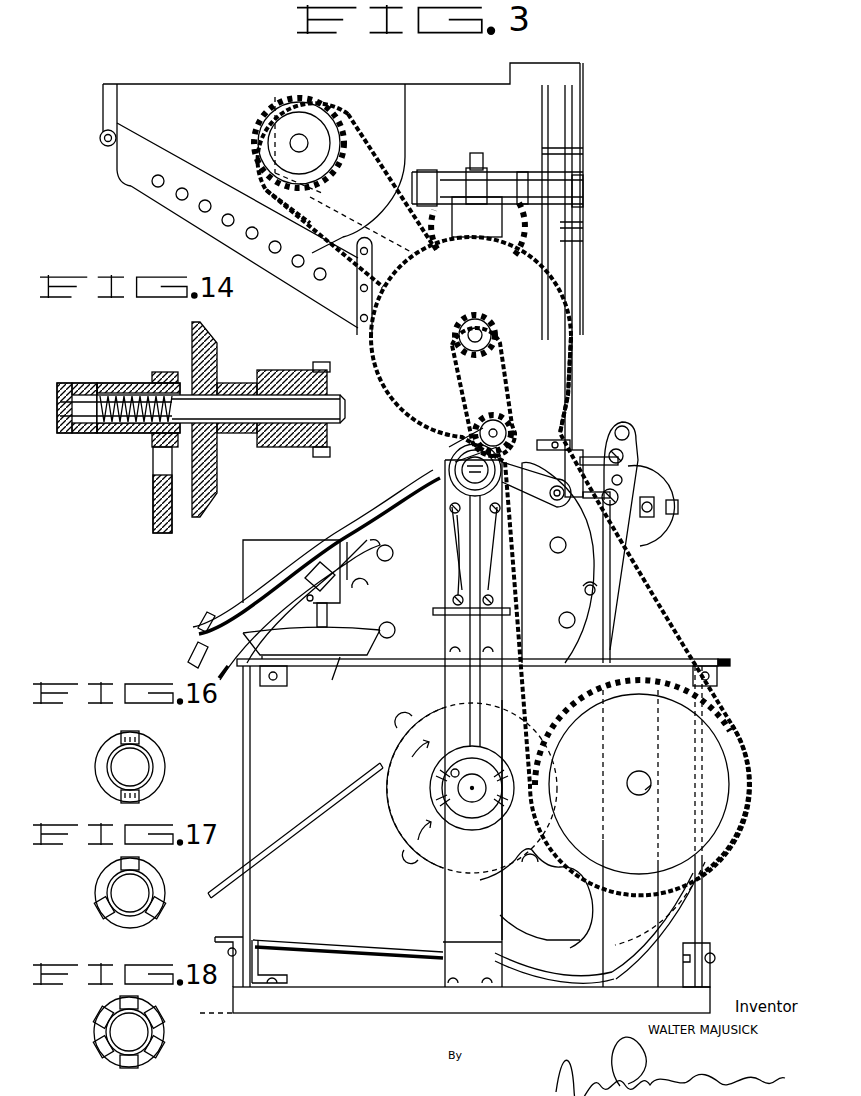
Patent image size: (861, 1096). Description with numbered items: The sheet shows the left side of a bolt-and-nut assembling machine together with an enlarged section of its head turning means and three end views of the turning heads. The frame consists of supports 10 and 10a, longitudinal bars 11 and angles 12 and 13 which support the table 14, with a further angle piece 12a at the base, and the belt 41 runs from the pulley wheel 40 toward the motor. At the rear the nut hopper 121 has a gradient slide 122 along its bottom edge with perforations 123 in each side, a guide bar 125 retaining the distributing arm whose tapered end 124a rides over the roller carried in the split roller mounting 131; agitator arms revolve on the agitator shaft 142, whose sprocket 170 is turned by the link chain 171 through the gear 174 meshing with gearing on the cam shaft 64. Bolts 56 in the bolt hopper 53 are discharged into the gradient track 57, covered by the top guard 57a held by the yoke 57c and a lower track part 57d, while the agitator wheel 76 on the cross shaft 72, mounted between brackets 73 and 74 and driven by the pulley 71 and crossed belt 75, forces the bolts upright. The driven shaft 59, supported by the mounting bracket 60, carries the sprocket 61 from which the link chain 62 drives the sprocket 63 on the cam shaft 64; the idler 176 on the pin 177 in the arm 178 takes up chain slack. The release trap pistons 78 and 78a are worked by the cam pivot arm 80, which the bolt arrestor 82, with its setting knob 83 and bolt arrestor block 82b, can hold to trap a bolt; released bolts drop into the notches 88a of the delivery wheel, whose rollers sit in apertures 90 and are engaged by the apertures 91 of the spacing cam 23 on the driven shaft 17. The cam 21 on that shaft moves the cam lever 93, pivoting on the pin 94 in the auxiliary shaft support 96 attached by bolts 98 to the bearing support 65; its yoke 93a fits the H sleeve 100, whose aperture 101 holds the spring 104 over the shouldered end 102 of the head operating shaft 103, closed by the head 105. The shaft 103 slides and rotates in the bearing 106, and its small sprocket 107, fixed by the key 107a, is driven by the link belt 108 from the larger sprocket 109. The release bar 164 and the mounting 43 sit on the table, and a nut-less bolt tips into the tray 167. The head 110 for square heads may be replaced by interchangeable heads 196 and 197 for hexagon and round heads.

In FIG. 3, the nut hopper 121 is at (178, 97).
In FIG. 3, the split roller mounting 131 is at (103, 98).
In FIG. 3, the tapered end of reciprocating distributing arm 124a is at (101, 136).
In FIG. 3, the gradient slide 122 is at (214, 232).
In FIG. 3, the perforations 123 is at (179, 199).
In FIG. 3, the guide bar 125 is at (358, 303).
In FIG. 3, the bolt hopper 53 is at (457, 95).
In FIG. 3, the agitator shaft 142 is at (312, 139).
In FIG. 3, the sprocket 170 is at (340, 137).
In FIG. 3, the link chain 171 is at (358, 142).
In FIG. 3, the bearing support 65 is at (467, 219).
In FIG. 3, the gear 174 is at (517, 216).
In FIG. 3, the bracket 73 is at (428, 170).
In FIG. 3, the cross shaft 72 is at (492, 183).
In FIG. 3, the crossed belt 75 is at (477, 152).
In FIG. 3, the pulley 71 is at (487, 163).
In FIG. 3, the bracket 74 is at (522, 172).
In FIG. 3, the agitator wheel 76 is at (565, 167).
In FIG. 3, the gradient track 57 is at (572, 223).
In FIG. 3, the top guard 57a is at (562, 203).
In FIG. 3, the link chain 62 is at (473, 322).
In FIG. 3, the sprocket 63 is at (498, 326).
In FIG. 3, the cam shaft 64 is at (470, 338).
In FIG. 3, the larger sprocket 109 is at (548, 347).
In FIG. 3, the link belt 108 is at (570, 368).
In FIG. 3, the idler 176 is at (487, 424).
In FIG. 3, the pin 177 is at (500, 419).
In FIG. 3, the arm 178 is at (447, 446).
In FIG. 3, the shouldered end of head operating shaft 102 is at (458, 468).
In FIG. 14, the shouldered end of head operating shaft 102 is at (66, 434).
In FIG. 3, the head 105 is at (462, 478).
In FIG. 14, the head 105 is at (63, 384).
In FIG. 3, the yoke 93a is at (453, 488).
In FIG. 14, the yoke 93a is at (160, 497).
In FIG. 3, the bolts 98 is at (450, 510).
In FIG. 3, the cam lever 93 is at (473, 627).
In FIG. 3, the auxiliary shaft support 96 is at (456, 557).
In FIG. 14, the auxiliary shaft support 96 is at (195, 333).
In FIG. 3, the pin 94 is at (433, 612).
In FIG. 3, the cam 21 is at (431, 787).
In FIG. 3, the driven shaft 17 is at (470, 801).
In FIG. 3, the spacing cam 23 is at (393, 810).
In FIG. 3, the apertures 91 is at (398, 716).
In FIG. 3, the table 14 is at (660, 667).
In FIG. 3, the driven shaft 59 is at (640, 755).
In FIG. 3, the sprocket 61 is at (737, 763).
In FIG. 3, the angle 13 is at (695, 676).
In FIG. 3, the tray 167 is at (357, 652).
In FIG. 3, the release bar 164 is at (327, 626).
In FIG. 3, the mounting 43 is at (244, 563).
In FIG. 3, the bolt 56 is at (310, 579).
In FIG. 3, the apertures 90 is at (388, 626).
In FIG. 3, the notches 88a is at (584, 592).
In FIG. 3, the plate 57d is at (540, 483).
In FIG. 3, the yoke 57c is at (580, 445).
In FIG. 3, the pin 78 is at (612, 450).
In FIG. 3, the pin 78a is at (624, 458).
In FIG. 3, the bolt arrestor 82 is at (667, 487).
In FIG. 3, the bolt arrestor block 82b is at (655, 498).
In FIG. 3, the setting knob 83 is at (678, 510).
In FIG. 3, the cam pivot arm 80 is at (632, 530).
In FIG. 3, the belt 41 is at (312, 817).
In FIG. 3, the support 10 is at (250, 913).
In FIG. 3, the end support 10a is at (453, 912).
In FIG. 3, the longitudinal bar 11 is at (240, 935).
In FIG. 3, the angle 12 is at (259, 968).
In FIG. 3, the base bar 12a is at (447, 968).
In FIG. 3, the pulley wheel 40 is at (578, 898).
In FIG. 3, the mounting bracket 60 is at (603, 972).
In FIG. 14, the bearing 106 is at (220, 385).
In FIG. 14, the small sprocket 107 is at (297, 377).
In FIG. 14, the key 107a is at (327, 381).
In FIG. 14, the H sleeve 100 is at (155, 382).
In FIG. 14, the aperture 101 is at (140, 388).
In FIG. 14, the head operating shaft 103 is at (237, 413).
In FIG. 14, the spring 104 is at (113, 418).
In FIG. 16, the head 110 is at (108, 750).
In FIG. 17, the interchangeable head 196 is at (104, 882).
In FIG. 18, the interchangeable head 197 is at (95, 1024).